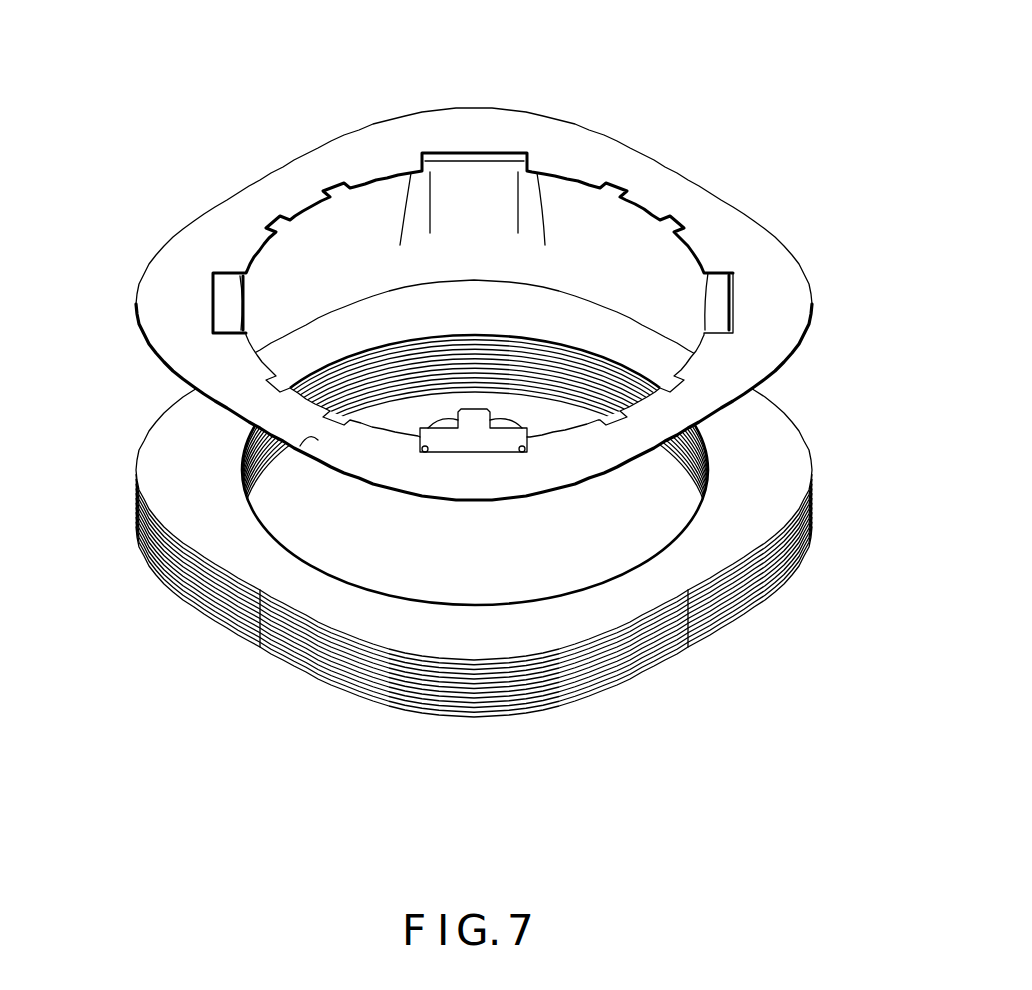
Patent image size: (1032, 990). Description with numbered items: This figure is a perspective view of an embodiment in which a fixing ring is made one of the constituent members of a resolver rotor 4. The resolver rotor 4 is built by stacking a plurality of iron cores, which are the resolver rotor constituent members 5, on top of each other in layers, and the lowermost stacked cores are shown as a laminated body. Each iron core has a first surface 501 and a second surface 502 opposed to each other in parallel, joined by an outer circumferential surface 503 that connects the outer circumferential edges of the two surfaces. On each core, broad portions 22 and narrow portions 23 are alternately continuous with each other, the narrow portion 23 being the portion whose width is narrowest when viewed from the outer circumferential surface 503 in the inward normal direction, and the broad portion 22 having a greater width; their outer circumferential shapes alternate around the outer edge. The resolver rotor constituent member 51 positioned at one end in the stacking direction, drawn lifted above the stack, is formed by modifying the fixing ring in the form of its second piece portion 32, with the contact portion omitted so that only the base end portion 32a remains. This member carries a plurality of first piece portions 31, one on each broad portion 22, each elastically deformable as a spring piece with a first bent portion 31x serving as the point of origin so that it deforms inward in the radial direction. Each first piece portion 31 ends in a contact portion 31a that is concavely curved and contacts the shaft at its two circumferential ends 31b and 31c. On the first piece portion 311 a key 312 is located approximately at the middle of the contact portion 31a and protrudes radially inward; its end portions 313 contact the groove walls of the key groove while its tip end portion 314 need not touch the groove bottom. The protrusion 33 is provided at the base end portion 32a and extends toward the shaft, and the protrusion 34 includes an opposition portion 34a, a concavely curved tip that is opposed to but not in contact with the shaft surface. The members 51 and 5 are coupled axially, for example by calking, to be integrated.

The resolver rotor 4 is at (464, 316).
The resolver rotor constituent member 5 is at (477, 415).
The resolver rotor constituent member 51 is at (797, 253).
The broad portion 22 is at (478, 105).
The narrow portion 23 is at (260, 178).
The first piece portion 31 is at (507, 151).
The contact portion 31a is at (474, 163).
The end of contact portion 31b is at (240, 272).
The end of contact portion 31c is at (246, 292).
The first bent portion 31x is at (455, 150).
The second piece portion 32 is at (386, 168).
The base end portion 32a is at (712, 348).
The protrusion 33 is at (246, 268).
The protrusion 34 is at (306, 188).
The opposition portion 34a is at (320, 210).
The first piece portion 311 is at (484, 448).
The key 312 is at (470, 430).
The end portion of key 313 is at (455, 410).
The tip end portion of key 314 is at (480, 409).
The first surface 501 is at (298, 438).
The second surface 502 is at (315, 450).
The outer circumferential surface 503 is at (612, 466).